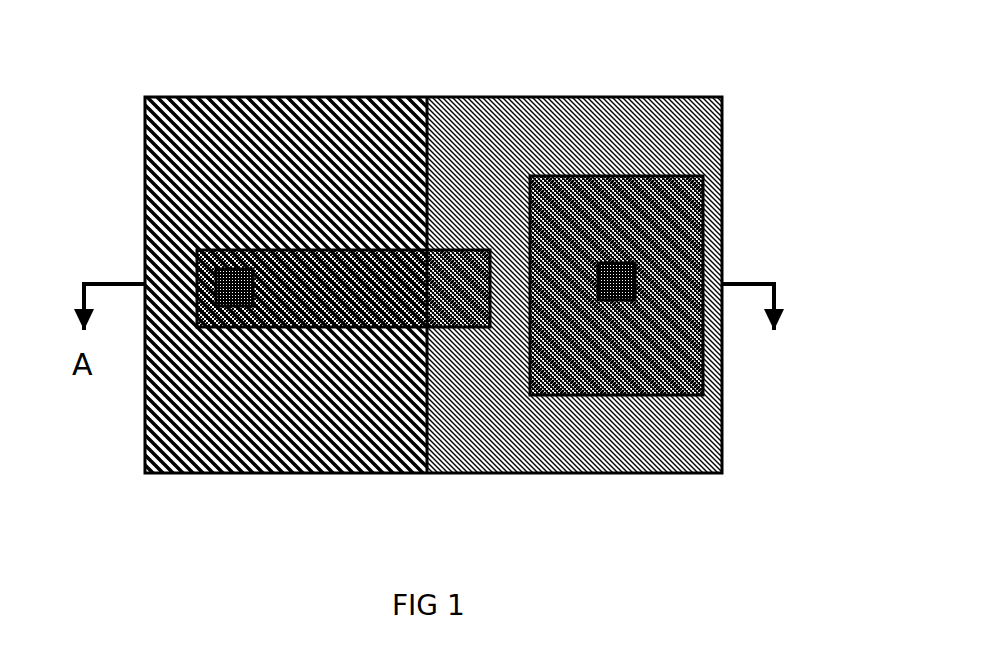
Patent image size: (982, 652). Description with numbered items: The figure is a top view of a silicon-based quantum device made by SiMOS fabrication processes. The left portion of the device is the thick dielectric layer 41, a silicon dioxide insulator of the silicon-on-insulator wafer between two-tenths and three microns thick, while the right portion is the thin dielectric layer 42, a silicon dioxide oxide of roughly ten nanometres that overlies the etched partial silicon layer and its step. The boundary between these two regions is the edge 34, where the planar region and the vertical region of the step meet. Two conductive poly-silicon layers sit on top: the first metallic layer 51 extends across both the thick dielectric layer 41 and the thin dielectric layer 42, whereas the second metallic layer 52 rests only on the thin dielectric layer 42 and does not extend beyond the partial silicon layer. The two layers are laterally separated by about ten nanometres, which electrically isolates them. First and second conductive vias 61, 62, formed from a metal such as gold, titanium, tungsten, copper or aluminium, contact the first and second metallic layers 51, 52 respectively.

The thick dielectric layer 41 is at (180, 430).
The thin dielectric layer 42 is at (651, 443).
The edge 34 is at (430, 410).
The first metallic layer 51 is at (313, 292).
The second metallic layer 52 is at (668, 220).
The first conductive via 61 is at (220, 283).
The second conductive via 62 is at (633, 280).